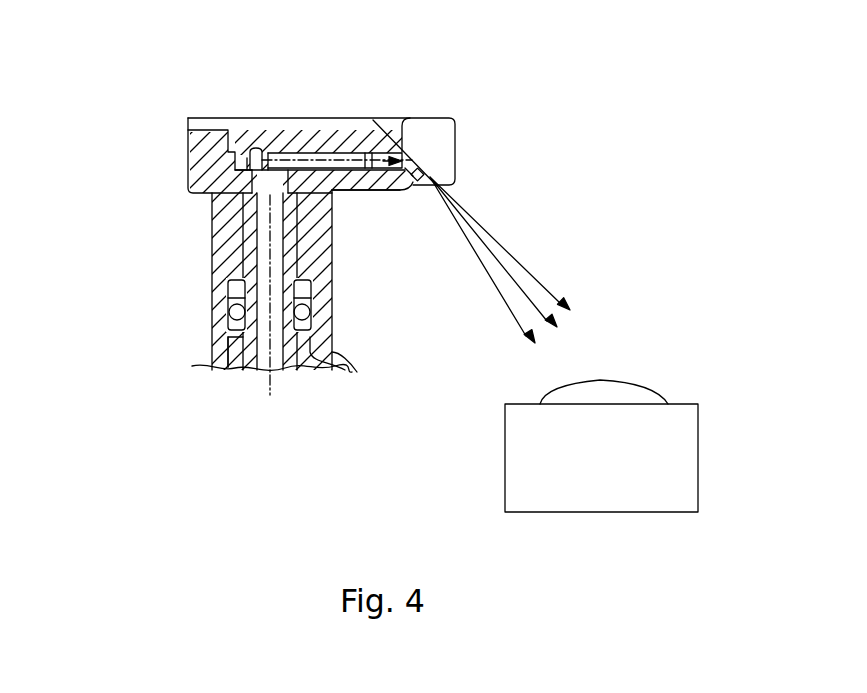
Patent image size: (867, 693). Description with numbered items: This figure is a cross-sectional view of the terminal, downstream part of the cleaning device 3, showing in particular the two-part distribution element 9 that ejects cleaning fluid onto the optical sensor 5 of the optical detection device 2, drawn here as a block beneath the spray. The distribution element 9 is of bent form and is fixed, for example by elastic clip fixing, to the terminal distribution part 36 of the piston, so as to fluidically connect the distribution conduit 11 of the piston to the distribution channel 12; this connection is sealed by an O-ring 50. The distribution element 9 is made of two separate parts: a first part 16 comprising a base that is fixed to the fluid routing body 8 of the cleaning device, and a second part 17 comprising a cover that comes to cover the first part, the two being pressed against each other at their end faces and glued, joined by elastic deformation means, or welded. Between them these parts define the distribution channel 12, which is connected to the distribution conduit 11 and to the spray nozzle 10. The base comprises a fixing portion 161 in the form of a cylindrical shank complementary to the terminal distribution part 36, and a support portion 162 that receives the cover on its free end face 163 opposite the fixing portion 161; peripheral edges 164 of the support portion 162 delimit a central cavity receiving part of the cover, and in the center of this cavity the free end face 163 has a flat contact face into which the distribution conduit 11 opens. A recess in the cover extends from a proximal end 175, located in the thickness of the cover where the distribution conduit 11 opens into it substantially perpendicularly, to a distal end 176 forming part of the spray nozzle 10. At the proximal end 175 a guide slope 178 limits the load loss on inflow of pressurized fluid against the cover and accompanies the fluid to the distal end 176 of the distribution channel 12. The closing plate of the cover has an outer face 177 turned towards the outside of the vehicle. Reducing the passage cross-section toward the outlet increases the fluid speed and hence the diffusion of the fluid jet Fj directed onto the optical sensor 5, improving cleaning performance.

The optical detection device 2 is at (478, 526).
The cleaning device 3 is at (138, 376).
The optical sensor 5 is at (625, 382).
The fluid routing body 8 is at (237, 362).
The distribution element 9 is at (372, 232).
The spray nozzle 10 is at (444, 159).
The distribution conduit 11 is at (273, 356).
The distribution channel 12 is at (348, 132).
The first part 16 is at (215, 262).
The second part 17 is at (190, 118).
The terminal distribution part 36 is at (210, 391).
The O-ring 50 is at (230, 316).
The fixing portion 161 is at (323, 314).
The support portion 162 is at (378, 190).
The free end face 163 is at (241, 158).
The peripheral edges 164 is at (208, 170).
The proximal end 175 is at (296, 135).
The distal end 176 is at (402, 137).
The outer face 177 is at (400, 106).
The guide slope 178 is at (267, 158).
The fluid jet Fj is at (508, 258).